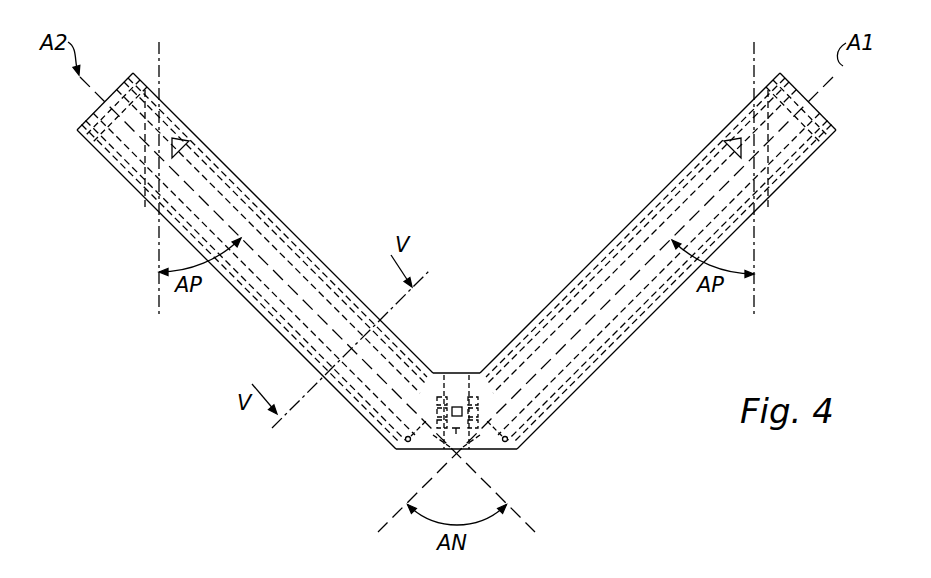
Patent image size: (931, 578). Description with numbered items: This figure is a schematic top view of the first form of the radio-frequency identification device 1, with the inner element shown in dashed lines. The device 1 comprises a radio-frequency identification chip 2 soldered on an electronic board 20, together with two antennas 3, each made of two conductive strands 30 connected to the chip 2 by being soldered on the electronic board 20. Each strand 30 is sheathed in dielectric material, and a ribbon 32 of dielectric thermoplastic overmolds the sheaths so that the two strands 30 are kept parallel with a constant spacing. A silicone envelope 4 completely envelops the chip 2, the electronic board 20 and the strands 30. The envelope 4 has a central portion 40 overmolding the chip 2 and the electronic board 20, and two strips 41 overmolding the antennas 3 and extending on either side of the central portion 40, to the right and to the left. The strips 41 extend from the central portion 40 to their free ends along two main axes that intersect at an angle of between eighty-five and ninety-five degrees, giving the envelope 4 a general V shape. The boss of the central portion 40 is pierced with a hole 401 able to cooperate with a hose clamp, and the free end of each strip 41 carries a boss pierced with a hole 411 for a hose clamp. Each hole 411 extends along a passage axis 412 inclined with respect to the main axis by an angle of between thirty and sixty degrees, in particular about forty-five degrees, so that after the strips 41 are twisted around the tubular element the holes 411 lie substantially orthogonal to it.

The radio-frequency identification device 1 is at (648, 451).
The radio-frequency identification chip 2 is at (450, 403).
The antenna 3 is at (292, 228).
The envelope 4 is at (600, 378).
The electronic board 20 is at (450, 447).
The conductive strand 30 is at (146, 70).
The ribbon 32 is at (120, 97).
The central portion 40 is at (469, 365).
The strip 41 is at (312, 240).
The hole 401 is at (500, 453).
The hole 411 is at (193, 133).
The passage axis 412 is at (157, 303).